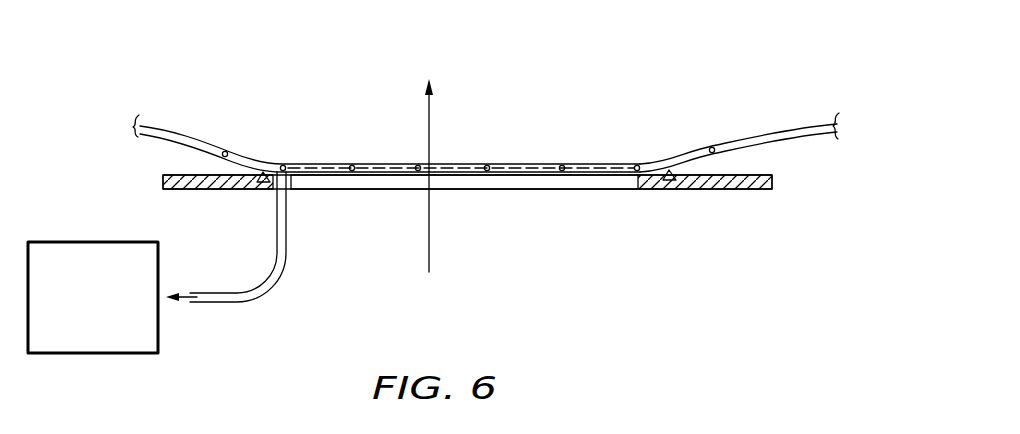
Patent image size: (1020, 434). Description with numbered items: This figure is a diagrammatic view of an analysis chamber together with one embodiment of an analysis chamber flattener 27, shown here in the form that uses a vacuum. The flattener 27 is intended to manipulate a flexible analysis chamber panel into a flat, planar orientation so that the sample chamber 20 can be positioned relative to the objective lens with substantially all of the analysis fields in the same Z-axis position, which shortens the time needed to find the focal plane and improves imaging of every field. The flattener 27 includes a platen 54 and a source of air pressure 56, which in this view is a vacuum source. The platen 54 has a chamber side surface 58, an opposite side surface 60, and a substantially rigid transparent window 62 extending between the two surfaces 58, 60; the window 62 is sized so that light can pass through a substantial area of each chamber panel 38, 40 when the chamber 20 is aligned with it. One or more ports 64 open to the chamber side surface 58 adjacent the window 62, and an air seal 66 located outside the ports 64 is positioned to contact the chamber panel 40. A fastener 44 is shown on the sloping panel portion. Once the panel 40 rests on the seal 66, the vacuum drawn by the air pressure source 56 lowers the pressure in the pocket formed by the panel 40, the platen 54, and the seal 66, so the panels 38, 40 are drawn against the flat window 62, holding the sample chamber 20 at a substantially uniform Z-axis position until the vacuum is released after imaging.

The analysis chamber flattener 27 is at (181, 76).
The sample chamber 20 is at (486, 131).
The analysis chamber panel 38 is at (804, 119).
The analysis chamber panel 40 is at (794, 138).
The fastener 44 is at (711, 146).
The air seal 66 is at (259, 170).
The chamber side surface 58 is at (421, 225).
The opposite side surface 60 is at (190, 192).
The transparent window 62 is at (508, 180).
The ports 64 is at (292, 189).
The platen 54 is at (651, 209).
The source of air pressure 56 is at (158, 334).